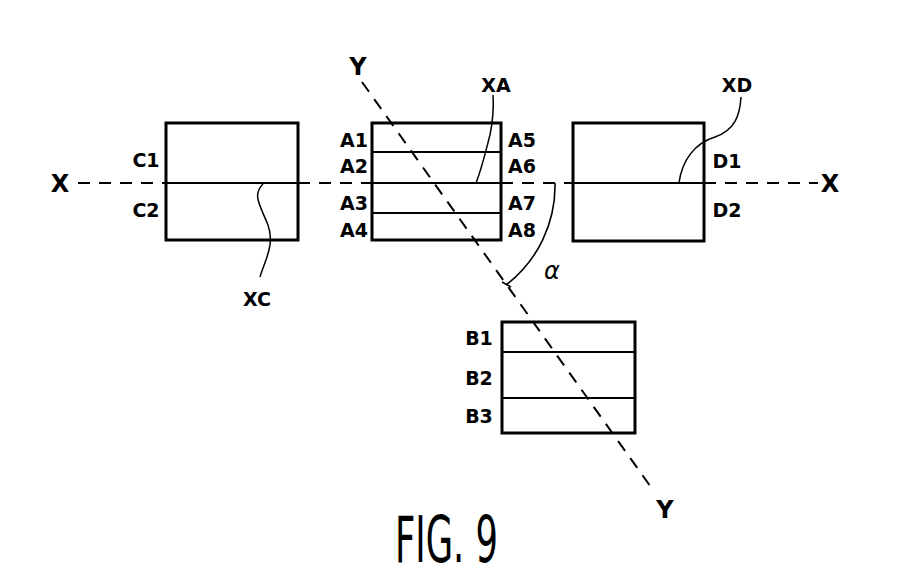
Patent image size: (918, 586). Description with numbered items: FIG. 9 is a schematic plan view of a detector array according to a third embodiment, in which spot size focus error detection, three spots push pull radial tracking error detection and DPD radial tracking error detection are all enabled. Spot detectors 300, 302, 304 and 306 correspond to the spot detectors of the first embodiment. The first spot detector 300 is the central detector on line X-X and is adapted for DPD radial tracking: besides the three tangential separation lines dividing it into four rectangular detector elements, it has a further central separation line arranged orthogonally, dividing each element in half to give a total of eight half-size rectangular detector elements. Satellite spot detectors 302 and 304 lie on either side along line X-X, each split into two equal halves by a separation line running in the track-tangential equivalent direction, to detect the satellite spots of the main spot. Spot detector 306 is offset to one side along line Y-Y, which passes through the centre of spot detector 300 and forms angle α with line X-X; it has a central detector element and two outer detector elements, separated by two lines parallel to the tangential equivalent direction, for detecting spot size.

The first spot detector 300 is at (460, 123).
The spot detector 302 is at (250, 123).
The spot detector 304 is at (652, 123).
The spot detector 306 is at (635, 415).